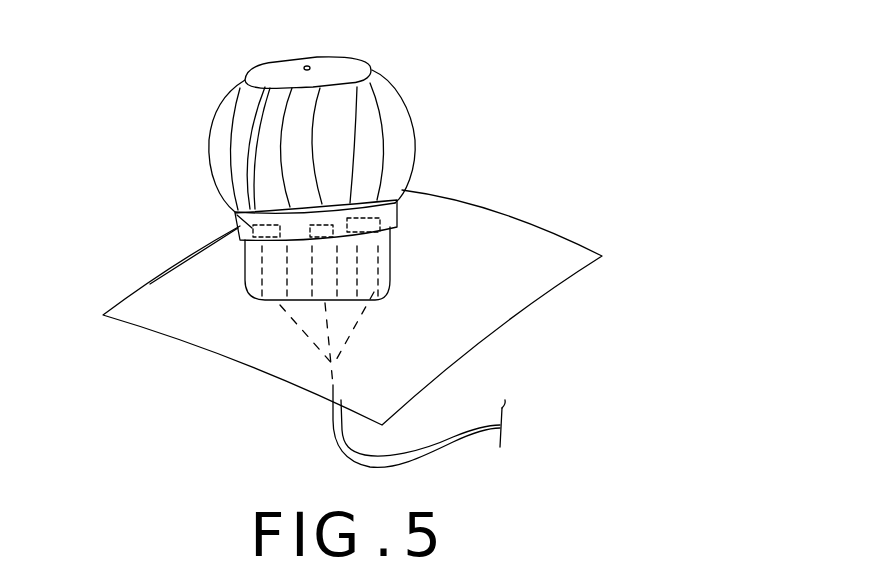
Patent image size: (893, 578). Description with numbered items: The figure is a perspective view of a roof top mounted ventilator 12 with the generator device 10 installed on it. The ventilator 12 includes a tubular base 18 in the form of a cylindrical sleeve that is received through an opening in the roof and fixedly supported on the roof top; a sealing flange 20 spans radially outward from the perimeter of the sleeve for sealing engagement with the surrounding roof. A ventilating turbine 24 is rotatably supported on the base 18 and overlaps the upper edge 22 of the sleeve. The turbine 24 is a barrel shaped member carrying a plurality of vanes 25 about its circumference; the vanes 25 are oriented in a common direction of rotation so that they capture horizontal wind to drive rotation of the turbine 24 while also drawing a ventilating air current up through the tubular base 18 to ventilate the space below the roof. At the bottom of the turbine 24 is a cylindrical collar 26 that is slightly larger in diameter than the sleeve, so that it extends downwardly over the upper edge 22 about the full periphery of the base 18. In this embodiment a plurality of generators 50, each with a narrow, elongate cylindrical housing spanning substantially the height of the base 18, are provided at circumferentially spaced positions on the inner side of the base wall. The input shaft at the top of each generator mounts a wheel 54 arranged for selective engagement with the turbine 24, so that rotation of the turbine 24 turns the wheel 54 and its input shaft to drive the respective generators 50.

The generator device 10 is at (288, 317).
The roof top mounted ventilator 12 is at (538, 125).
The tubular base 18 is at (407, 250).
The sealing flange 20 is at (537, 282).
The upper edge 22 is at (237, 231).
The ventilating turbine 24 is at (402, 90).
The vanes 25 is at (250, 130).
The cylindrical collar 26 is at (396, 218).
The generators 50 is at (340, 280).
The wheel 54 is at (343, 230).